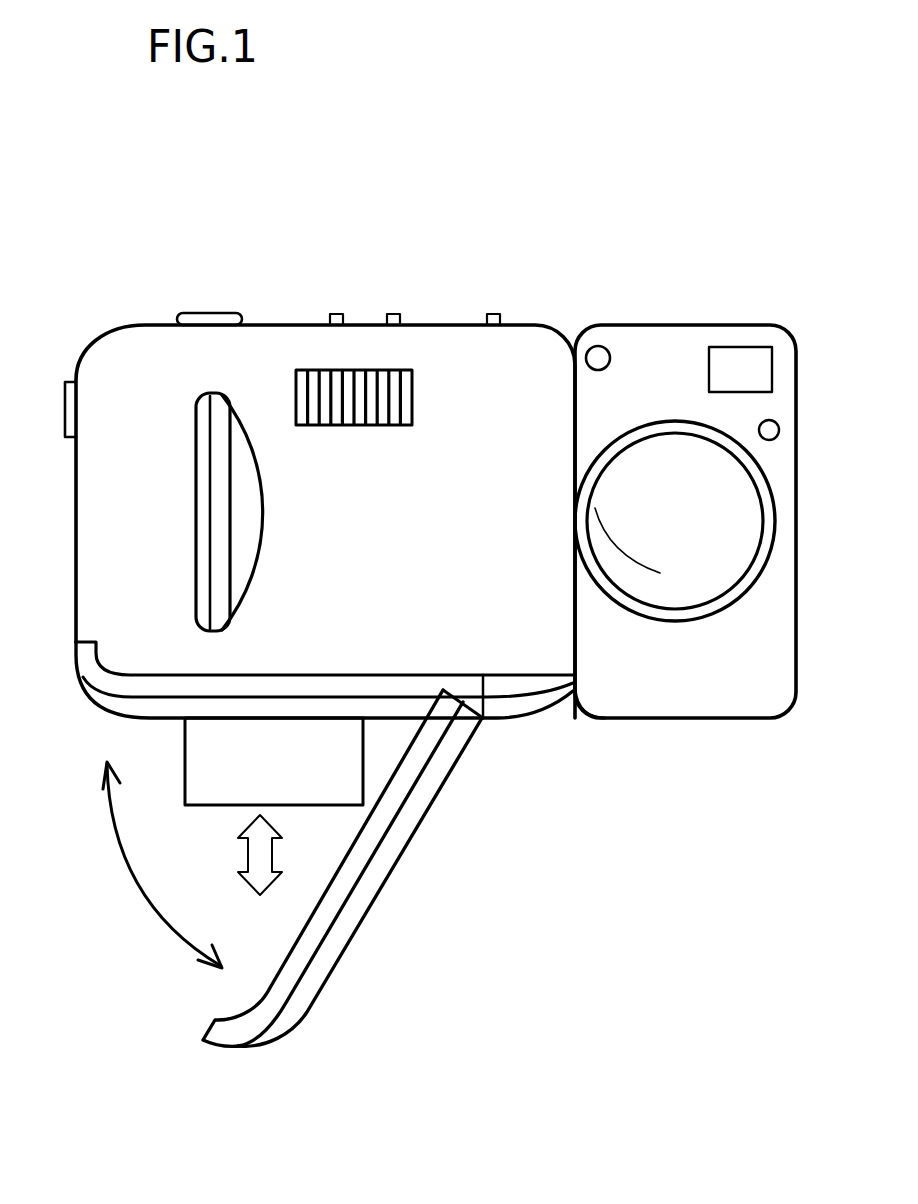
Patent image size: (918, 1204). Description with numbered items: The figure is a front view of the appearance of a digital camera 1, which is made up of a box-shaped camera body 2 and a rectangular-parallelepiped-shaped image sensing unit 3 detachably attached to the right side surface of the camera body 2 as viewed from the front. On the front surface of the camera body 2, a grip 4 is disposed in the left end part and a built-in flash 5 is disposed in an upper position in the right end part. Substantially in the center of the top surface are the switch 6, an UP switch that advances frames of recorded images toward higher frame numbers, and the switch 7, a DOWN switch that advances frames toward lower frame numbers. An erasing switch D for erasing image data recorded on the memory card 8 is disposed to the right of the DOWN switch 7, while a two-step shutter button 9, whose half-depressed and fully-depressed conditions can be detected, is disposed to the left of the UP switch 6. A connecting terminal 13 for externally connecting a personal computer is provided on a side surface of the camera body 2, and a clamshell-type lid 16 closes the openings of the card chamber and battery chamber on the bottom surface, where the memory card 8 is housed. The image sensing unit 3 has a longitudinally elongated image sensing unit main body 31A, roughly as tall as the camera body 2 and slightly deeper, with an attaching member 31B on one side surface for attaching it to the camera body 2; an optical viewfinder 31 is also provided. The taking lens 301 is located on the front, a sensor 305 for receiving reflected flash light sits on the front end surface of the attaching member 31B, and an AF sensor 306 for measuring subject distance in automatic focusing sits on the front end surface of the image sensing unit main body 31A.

The digital camera 1 is at (267, 191).
The camera body 2 is at (566, 263).
The image sensing unit 3 is at (794, 263).
The grip 4 is at (248, 525).
The built-in flash 5 is at (335, 418).
The switch (UP switch) 6 is at (336, 315).
The switch (DOWN switch) 7 is at (392, 315).
The erasing switch D is at (494, 315).
The memory card 8 is at (196, 745).
The shutter button 9 is at (214, 323).
The connecting terminal 13 is at (68, 415).
The clamshell-type lid 16 is at (377, 878).
The taking lens 301 is at (672, 594).
The sensor 305 is at (603, 356).
The AF sensor 306 is at (778, 434).
The optical viewfinder 31 is at (732, 368).
The image sensing unit main body 31A is at (782, 512).
The attaching member 31B is at (585, 697).